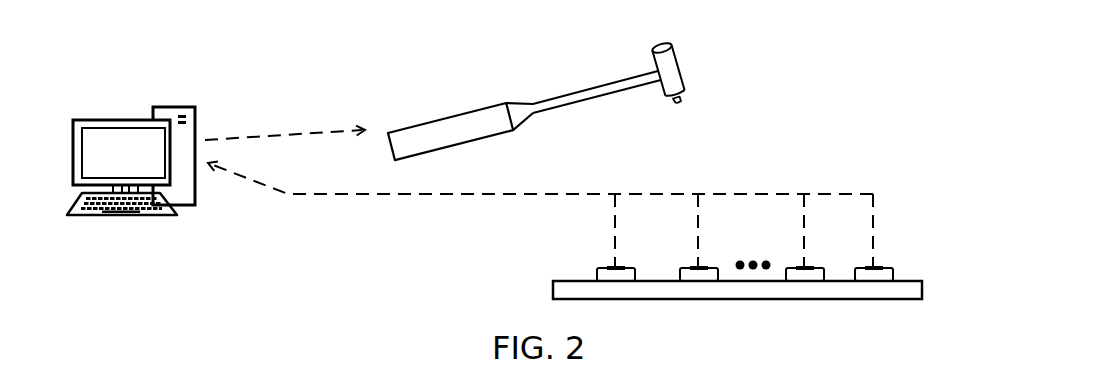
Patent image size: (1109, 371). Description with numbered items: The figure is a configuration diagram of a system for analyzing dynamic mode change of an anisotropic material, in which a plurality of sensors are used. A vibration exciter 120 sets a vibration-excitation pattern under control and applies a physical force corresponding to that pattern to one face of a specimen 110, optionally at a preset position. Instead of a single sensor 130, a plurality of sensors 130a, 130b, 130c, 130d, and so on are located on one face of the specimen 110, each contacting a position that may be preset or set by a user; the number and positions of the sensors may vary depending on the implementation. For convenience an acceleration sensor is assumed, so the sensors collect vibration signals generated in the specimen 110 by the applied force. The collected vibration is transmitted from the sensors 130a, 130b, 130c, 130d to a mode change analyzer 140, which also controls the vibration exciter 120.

The specimen 110 is at (922, 290).
The vibration exciter 120 is at (678, 66).
The sensor 130 is at (935, 200).
The sensor 130a is at (628, 267).
The sensor 130b is at (708, 267).
The sensor 130c is at (813, 267).
The sensor 130d is at (883, 267).
The mode change analyzer 140 is at (195, 113).